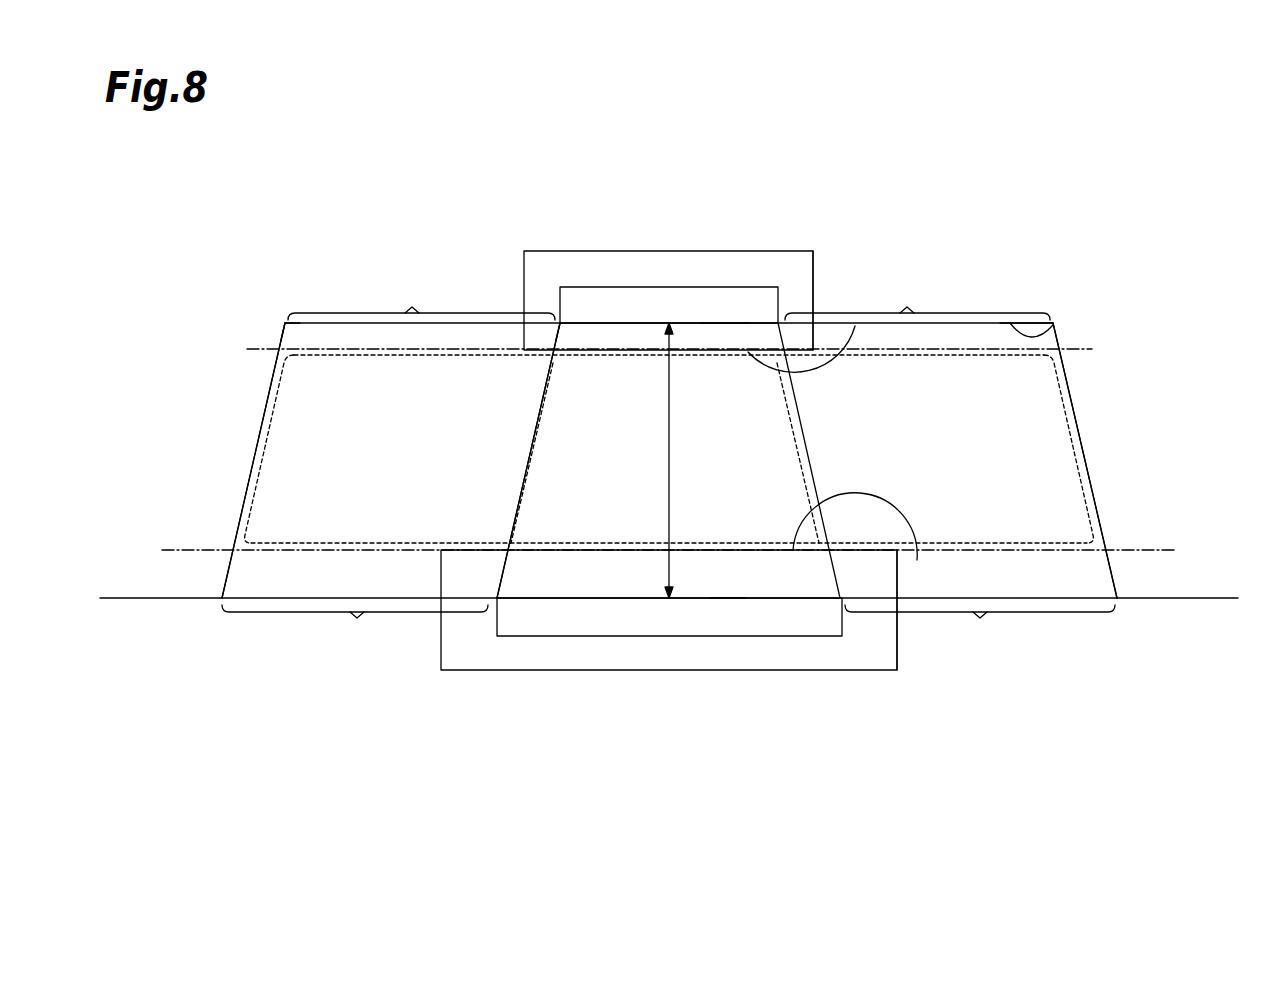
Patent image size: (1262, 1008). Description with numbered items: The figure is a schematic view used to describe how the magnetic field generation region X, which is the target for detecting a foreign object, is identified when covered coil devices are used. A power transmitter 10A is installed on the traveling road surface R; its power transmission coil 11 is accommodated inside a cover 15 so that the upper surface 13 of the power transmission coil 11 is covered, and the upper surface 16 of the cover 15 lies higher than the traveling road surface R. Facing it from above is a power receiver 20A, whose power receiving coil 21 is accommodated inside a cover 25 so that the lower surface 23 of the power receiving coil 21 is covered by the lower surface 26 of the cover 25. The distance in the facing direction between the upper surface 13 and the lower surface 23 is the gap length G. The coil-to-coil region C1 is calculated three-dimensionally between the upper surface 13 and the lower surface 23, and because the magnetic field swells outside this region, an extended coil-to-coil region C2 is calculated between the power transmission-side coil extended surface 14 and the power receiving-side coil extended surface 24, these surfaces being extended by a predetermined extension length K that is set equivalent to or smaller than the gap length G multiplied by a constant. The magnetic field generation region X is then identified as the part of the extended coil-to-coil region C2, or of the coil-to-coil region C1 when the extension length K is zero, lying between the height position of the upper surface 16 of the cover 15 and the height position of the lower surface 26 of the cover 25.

The power receiver 20A is at (577, 251).
The power receiving coil 21 is at (660, 287).
The lower surface of the power receiving coil 23 is at (707, 327).
The cover 25 is at (777, 251).
The lower surface of the cover 26 is at (855, 326).
The power receiving-side coil extended surface 24 is at (1057, 332).
The power transmission-side coil extended surface 14 is at (1089, 598).
The power transmitter 10A is at (559, 670).
The power transmission coil 11 is at (652, 636).
The upper surface of the power transmission coil 13 is at (710, 600).
The cover 15 is at (835, 670).
The upper surface of the cover 16 is at (917, 560).
The coil-to-coil region C1 is at (553, 338).
The extended coil-to-coil region C2 is at (284, 332).
The extension length K is at (668, 463).
The magnetic field generation region X is at (252, 448).
The gap length G is at (681, 460).
The traveling road surface R is at (1205, 598).